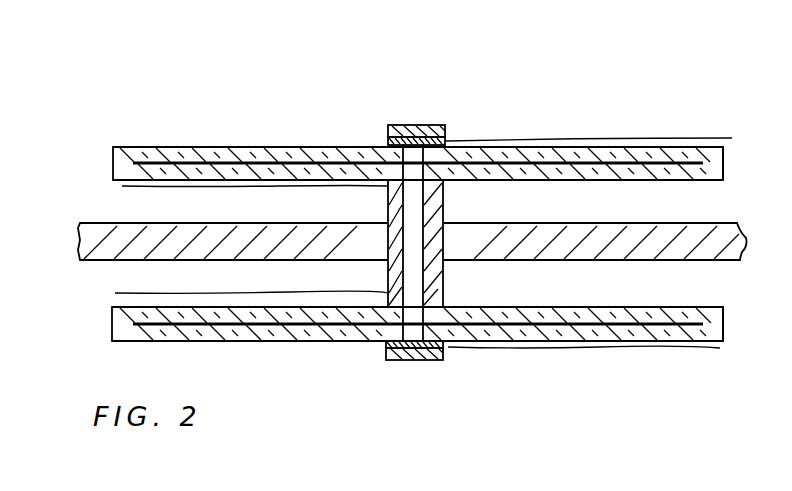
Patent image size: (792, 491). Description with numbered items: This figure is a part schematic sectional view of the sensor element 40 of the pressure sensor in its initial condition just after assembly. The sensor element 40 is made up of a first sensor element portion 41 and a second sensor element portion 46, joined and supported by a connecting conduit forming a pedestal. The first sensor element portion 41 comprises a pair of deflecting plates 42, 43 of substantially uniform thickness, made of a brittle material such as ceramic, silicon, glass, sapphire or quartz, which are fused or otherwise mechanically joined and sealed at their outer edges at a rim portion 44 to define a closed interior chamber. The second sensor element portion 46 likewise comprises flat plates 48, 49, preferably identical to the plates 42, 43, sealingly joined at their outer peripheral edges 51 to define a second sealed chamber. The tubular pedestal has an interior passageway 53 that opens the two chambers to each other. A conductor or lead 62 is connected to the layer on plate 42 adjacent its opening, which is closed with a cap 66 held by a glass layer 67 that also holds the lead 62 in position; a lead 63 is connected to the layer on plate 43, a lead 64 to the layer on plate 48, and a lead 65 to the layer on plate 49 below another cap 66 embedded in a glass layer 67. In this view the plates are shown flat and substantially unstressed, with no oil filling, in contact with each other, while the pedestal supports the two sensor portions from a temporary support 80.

The sensor element 40 is at (448, 270).
The first sensor element portion 41 is at (255, 133).
The plate 42 is at (518, 145).
The plate 43 is at (543, 182).
The rim portion 44 is at (710, 152).
The second sensor element portion 46 is at (246, 339).
The plate 48 is at (525, 308).
The plate 49 is at (610, 343).
The outer peripheral edges 51 is at (686, 343).
The interior passageway 53 is at (387, 203).
The conductor or lead 62 is at (598, 139).
The conductor or lead 63 is at (152, 188).
The conductor or lead 64 is at (153, 293).
The lead 65 is at (563, 350).
The cap 66 is at (405, 125).
The glass layer 67 is at (445, 145).
The temporary support 80 is at (658, 260).